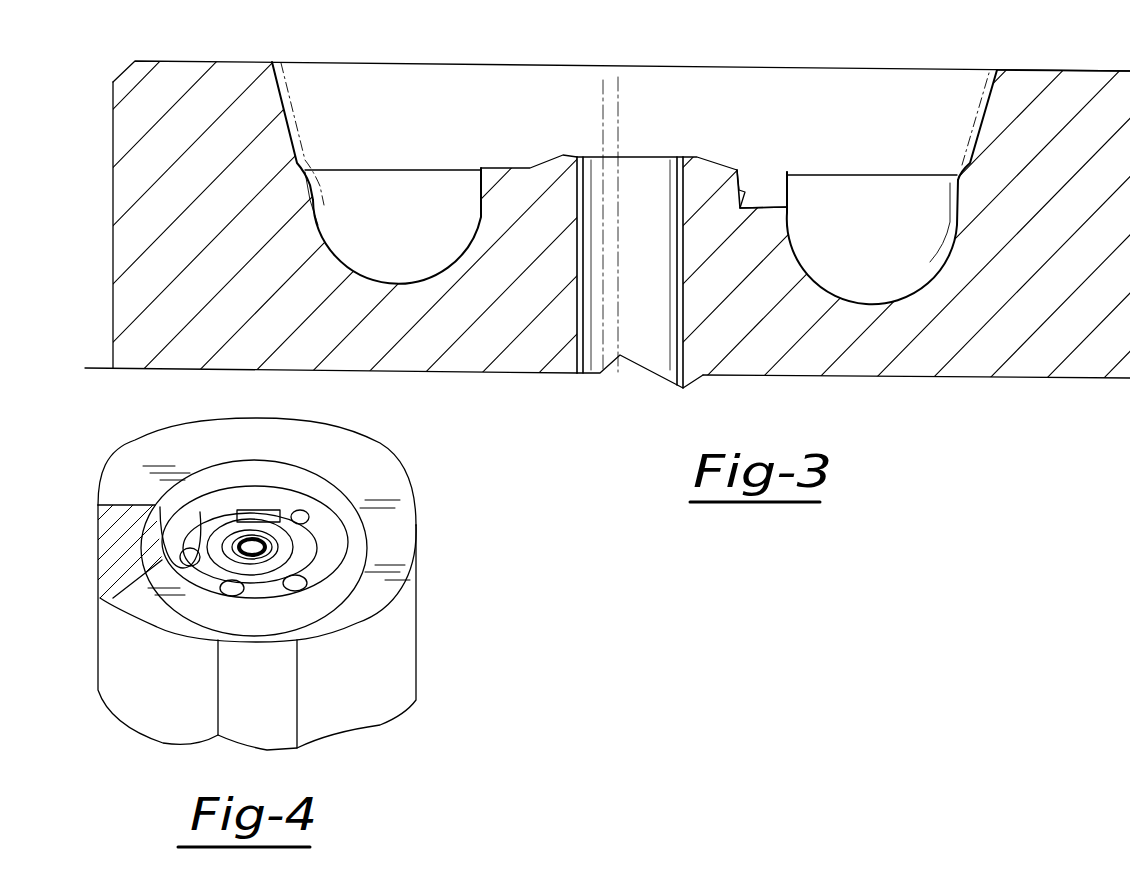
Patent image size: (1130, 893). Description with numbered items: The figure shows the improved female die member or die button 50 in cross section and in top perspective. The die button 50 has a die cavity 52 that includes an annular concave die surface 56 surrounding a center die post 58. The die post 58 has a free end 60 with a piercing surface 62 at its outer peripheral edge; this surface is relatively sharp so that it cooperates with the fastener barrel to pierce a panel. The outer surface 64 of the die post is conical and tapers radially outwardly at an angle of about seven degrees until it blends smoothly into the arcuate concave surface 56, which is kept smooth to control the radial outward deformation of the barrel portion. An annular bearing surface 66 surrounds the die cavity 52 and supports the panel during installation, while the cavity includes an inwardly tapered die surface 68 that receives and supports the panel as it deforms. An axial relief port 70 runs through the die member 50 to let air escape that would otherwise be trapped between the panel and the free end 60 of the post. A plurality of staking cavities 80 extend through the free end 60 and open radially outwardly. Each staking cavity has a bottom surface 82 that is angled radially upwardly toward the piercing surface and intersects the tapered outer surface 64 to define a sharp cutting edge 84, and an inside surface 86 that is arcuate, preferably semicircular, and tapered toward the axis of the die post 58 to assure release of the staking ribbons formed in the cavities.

In FIG. 3, the female die member 50 is at (206, 298).
In FIG. 4, the female die member 50 is at (397, 613).
In FIG. 3, the die cavity 52 is at (308, 78).
In FIG. 4, the die cavity 52 is at (182, 476).
In FIG. 3, the annular concave die surface 56 is at (315, 209).
In FIG. 4, the annular concave die surface 56 is at (102, 513).
In FIG. 3, the center die post 58 is at (522, 146).
In FIG. 4, the center die post 58 is at (325, 548).
In FIG. 3, the free end 60 is at (737, 170).
In FIG. 4, the free end 60 is at (258, 585).
In FIG. 3, the piercing surface 62 is at (480, 162).
In FIG. 4, the piercing surface 62 is at (213, 517).
In FIG. 3, the outer surface 64 is at (480, 222).
In FIG. 3, the annular bearing surface 66 is at (1053, 70).
In FIG. 4, the annular bearing surface 66 is at (265, 523).
In FIG. 3, the inwardly tapered die surface 68 is at (977, 137).
In FIG. 3, the axial relief port 70 is at (680, 277).
In FIG. 4, the axial relief port 70 is at (257, 537).
In FIG. 3, the staking cavities 80 is at (765, 173).
In FIG. 4, the staking cavities 80 is at (297, 523).
In FIG. 3, the bottom surface 82 is at (770, 210).
In FIG. 3, the cutting edge 84 is at (787, 200).
In FIG. 3, the inside surface 86 is at (745, 190).
In FIG. 4, the inside surface 86 is at (303, 587).